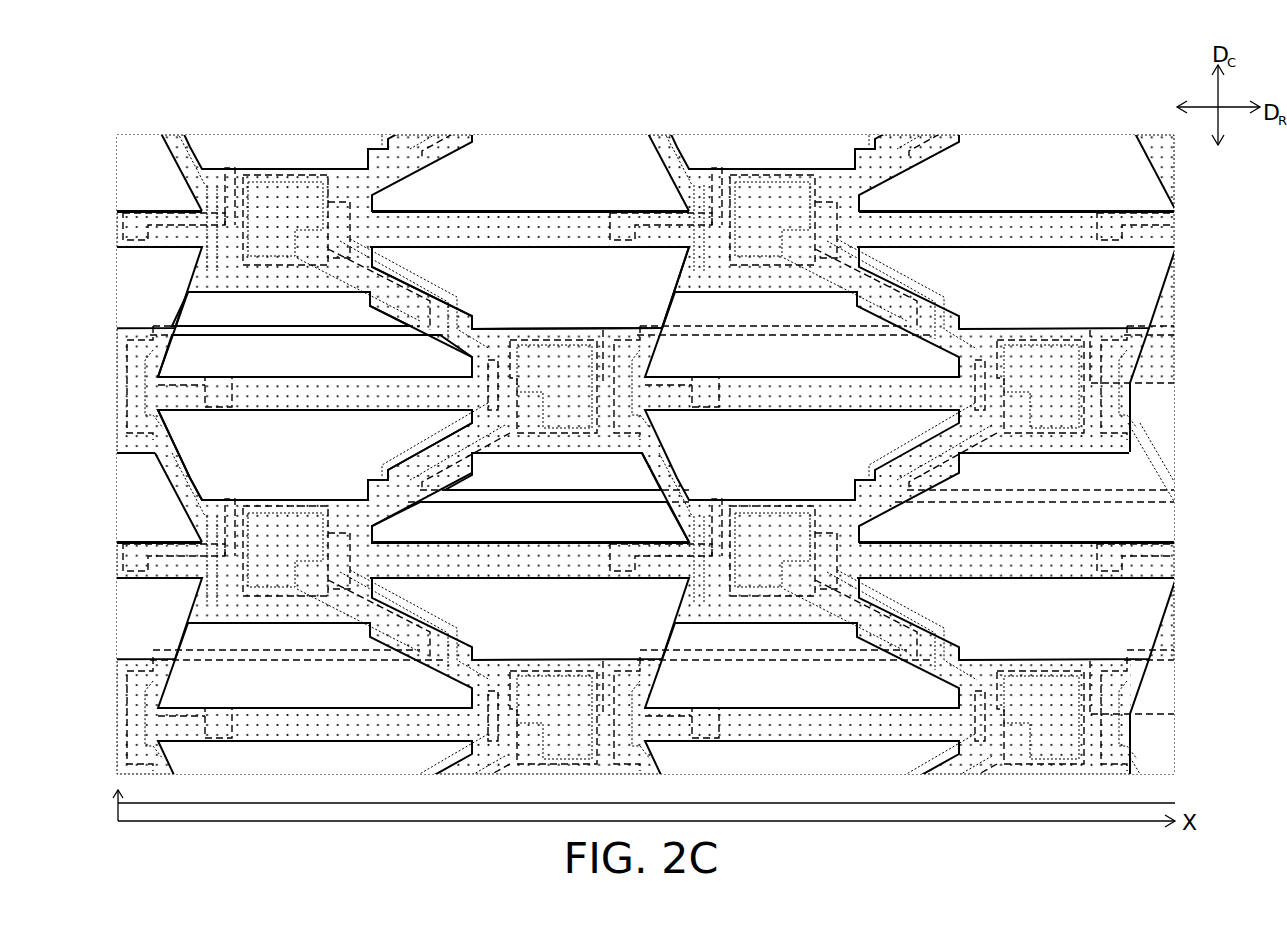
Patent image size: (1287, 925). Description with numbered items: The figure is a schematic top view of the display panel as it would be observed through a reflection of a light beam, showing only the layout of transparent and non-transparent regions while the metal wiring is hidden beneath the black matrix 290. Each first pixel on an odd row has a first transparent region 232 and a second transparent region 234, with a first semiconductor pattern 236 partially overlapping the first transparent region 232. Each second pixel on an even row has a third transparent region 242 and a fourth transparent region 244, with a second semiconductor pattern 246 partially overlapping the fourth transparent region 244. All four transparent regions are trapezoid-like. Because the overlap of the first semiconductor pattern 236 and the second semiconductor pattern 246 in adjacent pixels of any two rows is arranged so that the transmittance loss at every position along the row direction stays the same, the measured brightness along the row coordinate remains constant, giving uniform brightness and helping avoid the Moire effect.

The first transparent region 232 is at (315, 356).
The second transparent region 234 is at (530, 288).
The first semiconductor pattern 236 is at (250, 325).
The third transparent region 242 is at (315, 455).
The fourth transparent region 244 is at (530, 522).
The second semiconductor pattern 246 is at (531, 494).
The black matrix 290 is at (1175, 232).